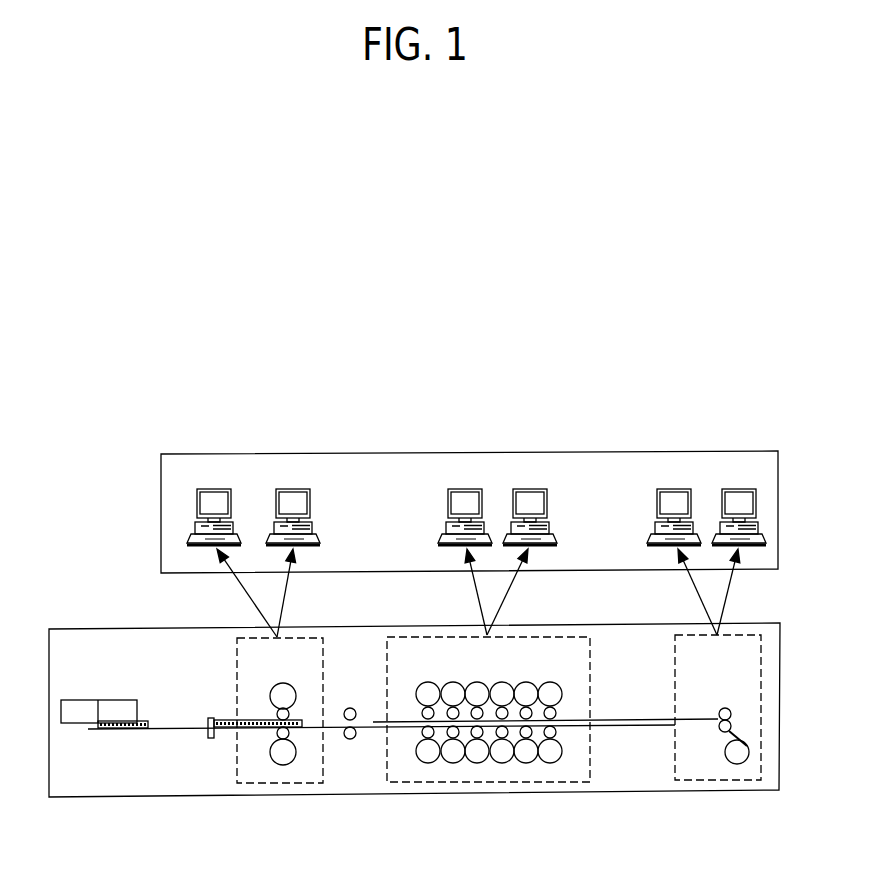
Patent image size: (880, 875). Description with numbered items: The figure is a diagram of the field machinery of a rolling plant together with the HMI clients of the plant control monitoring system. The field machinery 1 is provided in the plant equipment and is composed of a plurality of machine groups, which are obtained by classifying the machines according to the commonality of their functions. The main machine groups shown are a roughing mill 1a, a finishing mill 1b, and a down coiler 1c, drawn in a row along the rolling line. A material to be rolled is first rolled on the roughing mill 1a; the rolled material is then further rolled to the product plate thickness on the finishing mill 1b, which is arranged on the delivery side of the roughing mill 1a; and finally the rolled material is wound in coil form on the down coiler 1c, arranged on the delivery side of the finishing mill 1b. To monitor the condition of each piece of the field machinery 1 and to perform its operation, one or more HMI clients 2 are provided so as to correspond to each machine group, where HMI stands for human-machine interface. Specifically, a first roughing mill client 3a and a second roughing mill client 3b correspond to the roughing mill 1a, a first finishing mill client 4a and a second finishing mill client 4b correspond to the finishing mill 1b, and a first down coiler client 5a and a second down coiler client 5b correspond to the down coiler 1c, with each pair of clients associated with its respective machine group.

The field machinery 1 is at (207, 626).
The roughing mill 1a is at (323, 649).
The finishing mill 1b is at (590, 649).
The down coiler 1c is at (673, 761).
The HMI clients 2 is at (160, 502).
The first roughing mill client 3a is at (232, 494).
The second roughing mill client 3b is at (311, 494).
The first finishing mill client 4a is at (447, 494).
The second finishing mill client 4b is at (512, 494).
The first down coiler client 5a is at (656, 494).
The second down coiler client 5b is at (721, 494).